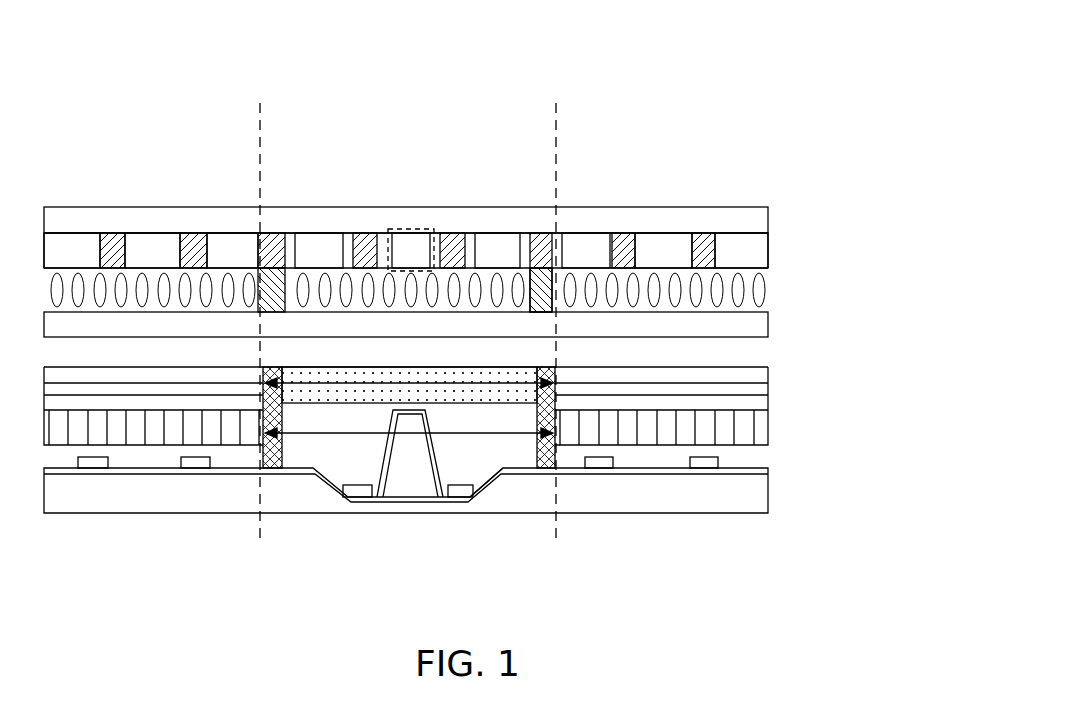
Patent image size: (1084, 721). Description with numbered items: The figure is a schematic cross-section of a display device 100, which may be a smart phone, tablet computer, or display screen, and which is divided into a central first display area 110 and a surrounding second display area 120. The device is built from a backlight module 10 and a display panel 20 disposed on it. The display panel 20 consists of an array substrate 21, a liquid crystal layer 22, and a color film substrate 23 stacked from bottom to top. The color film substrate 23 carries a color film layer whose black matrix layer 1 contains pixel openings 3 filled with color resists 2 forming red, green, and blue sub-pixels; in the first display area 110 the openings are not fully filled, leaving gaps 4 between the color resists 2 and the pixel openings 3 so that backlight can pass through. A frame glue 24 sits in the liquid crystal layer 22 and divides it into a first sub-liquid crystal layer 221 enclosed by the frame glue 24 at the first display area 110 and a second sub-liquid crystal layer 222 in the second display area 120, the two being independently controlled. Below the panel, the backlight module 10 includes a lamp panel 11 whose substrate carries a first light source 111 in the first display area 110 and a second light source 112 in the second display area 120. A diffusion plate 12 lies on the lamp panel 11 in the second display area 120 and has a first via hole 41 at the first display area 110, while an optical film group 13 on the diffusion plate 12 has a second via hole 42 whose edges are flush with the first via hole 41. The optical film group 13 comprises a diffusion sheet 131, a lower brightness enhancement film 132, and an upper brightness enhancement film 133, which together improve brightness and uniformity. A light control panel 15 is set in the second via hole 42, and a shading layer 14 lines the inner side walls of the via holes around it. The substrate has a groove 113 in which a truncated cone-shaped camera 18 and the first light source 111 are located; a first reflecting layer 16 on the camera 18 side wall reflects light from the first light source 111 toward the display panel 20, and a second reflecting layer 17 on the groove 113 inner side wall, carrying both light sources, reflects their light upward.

The display device 100 is at (105, 45).
The first display area 110 is at (420, 125).
The second display area 120 is at (143, 125).
The display panel 20 is at (900, 150).
The color film substrate 23 is at (840, 187).
The color resist 2 is at (675, 243).
The black matrix layer 1 is at (708, 252).
The pixel opening 3 is at (427, 232).
The gap 4 is at (525, 253).
The frame glue 24 is at (543, 290).
The liquid crystal layer 22 is at (718, 293).
The second sub-liquid crystal layer 222 is at (167, 290).
The first sub-liquid crystal layer 221 is at (347, 288).
The array substrate 21 is at (718, 327).
The backlight module 10 is at (903, 367).
The optical film group 13 is at (838, 343).
The upper brightness enhancement film 133 is at (693, 374).
The lower brightness enhancement film 132 is at (697, 388).
The diffusion sheet 131 is at (697, 403).
The diffusion plate 12 is at (718, 430).
The shading layer 14 is at (547, 462).
The second via hole 42 is at (367, 383).
The light control panel 15 is at (300, 392).
The first via hole 41 is at (365, 433).
The first reflecting layer 16 is at (392, 445).
The camera 18 is at (390, 487).
The lamp panel 11 is at (708, 497).
The second reflecting layer 17 is at (733, 472).
The groove 113 is at (488, 485).
The first light source 111 is at (462, 492).
The second light source 112 is at (603, 462).